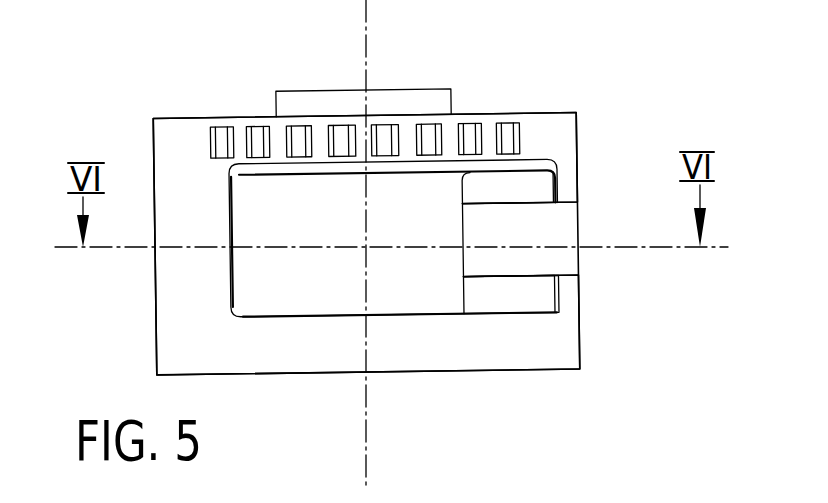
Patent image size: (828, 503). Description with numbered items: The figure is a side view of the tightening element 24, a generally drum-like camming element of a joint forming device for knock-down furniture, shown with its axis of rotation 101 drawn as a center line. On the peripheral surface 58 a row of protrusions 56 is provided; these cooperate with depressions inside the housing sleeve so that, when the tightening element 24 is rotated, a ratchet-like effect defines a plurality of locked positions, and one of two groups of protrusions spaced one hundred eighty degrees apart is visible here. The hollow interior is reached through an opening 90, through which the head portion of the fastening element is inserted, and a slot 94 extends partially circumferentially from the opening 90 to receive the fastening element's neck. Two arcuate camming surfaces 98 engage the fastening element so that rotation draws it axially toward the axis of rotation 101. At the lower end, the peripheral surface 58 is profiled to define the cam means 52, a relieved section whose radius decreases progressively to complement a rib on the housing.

The tightening element 24 is at (153, 160).
The cam means 52 is at (579, 343).
The protrusions 56 is at (263, 137).
The peripheral surface 58 is at (182, 138).
The opening 90 is at (382, 265).
The slot 94 is at (558, 226).
The arcuate camming surfaces 98 is at (527, 182).
The axis of rotation 101 is at (365, 38).